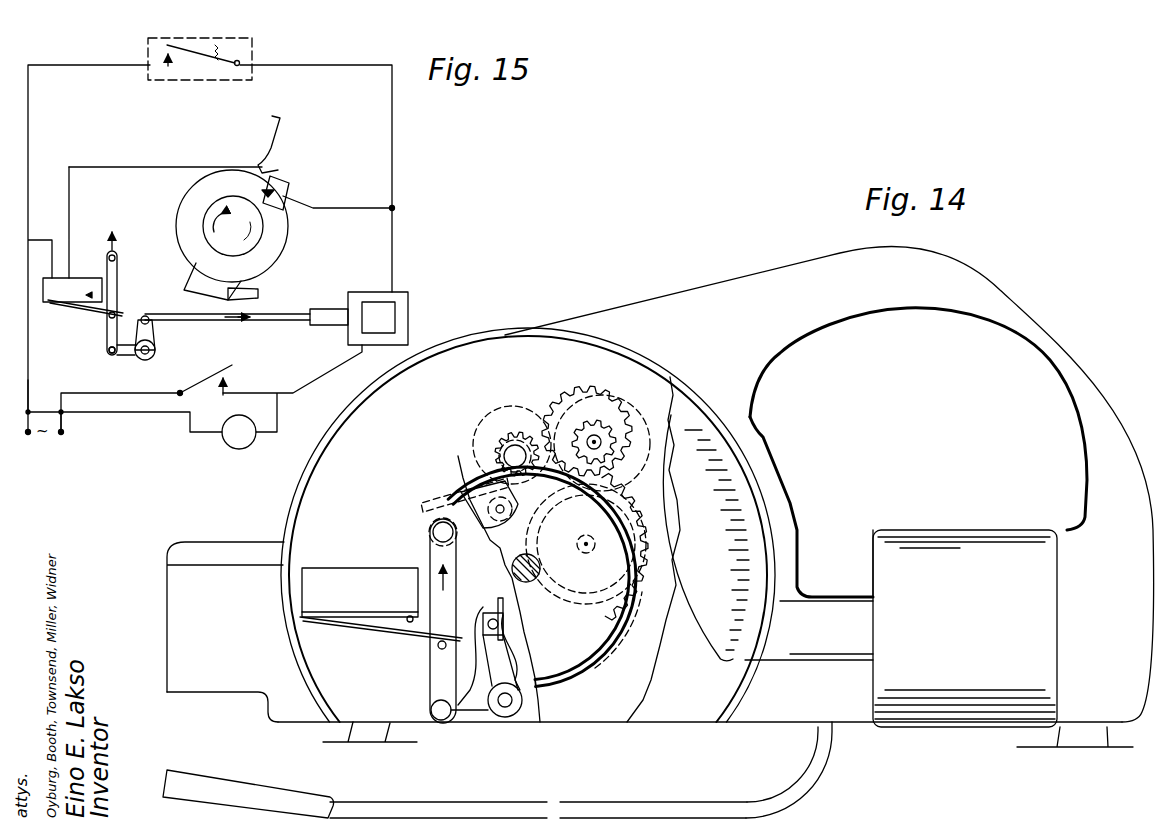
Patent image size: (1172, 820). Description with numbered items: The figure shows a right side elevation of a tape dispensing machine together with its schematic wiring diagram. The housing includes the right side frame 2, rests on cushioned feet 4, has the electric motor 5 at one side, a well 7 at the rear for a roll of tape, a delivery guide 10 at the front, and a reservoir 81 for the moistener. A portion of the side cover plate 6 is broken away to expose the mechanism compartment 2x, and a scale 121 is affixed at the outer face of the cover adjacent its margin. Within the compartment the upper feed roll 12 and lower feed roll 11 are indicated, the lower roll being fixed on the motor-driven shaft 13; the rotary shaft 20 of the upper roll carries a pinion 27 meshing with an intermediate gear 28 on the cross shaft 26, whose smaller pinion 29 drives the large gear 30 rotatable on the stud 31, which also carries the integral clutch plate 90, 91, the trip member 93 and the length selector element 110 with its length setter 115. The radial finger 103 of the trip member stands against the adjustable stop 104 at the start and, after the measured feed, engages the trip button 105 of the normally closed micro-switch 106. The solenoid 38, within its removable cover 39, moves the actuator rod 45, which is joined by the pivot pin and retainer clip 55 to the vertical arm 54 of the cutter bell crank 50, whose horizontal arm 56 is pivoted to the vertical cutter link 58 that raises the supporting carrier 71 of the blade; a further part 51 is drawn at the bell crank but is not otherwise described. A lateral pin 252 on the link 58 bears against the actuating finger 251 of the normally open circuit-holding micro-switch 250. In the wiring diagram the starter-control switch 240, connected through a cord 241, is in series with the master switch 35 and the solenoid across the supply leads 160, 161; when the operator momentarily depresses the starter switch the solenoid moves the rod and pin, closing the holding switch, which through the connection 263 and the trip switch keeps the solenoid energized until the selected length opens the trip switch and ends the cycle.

In FIG. 14, the right side frame 2 is at (1024, 273).
In FIG. 14, the mechanism compartment 2x is at (603, 350).
In FIG. 14, the cushioned feet 4 is at (358, 732).
In FIG. 15, the electric motor 5 is at (253, 423).
In FIG. 14, the side cover plate 6 is at (668, 724).
In FIG. 14, the well 7 is at (1020, 383).
In FIG. 14, the delivery guide 10 is at (236, 548).
In FIG. 14, the lower feed roll 11 is at (598, 603).
In FIG. 14, the upper feed roll 12 is at (474, 440).
In FIG. 14, the motor-driven shaft 13 is at (583, 544).
In FIG. 14, the rotary shaft 20 is at (519, 512).
In FIG. 14, the cross shaft 26 is at (600, 442).
In FIG. 14, the pinion 27 is at (517, 440).
In FIG. 14, the intermediate gear 28 is at (583, 394).
In FIG. 14, the smaller pinion 29 is at (598, 434).
In FIG. 14, the large gear 30 is at (632, 547).
In FIG. 14, the stud 31 is at (527, 583).
In FIG. 15, the master switch 35 is at (212, 378).
In FIG. 14, the solenoid 38 is at (962, 526).
In FIG. 15, the removable cover 39 is at (408, 300).
In FIG. 14, the removable cover 39 is at (1035, 607).
In FIG. 15, the actuator rod 45 is at (291, 321).
In FIG. 14, the actuator rod 45 is at (594, 592).
In FIG. 14, the cutter bell crank 50 is at (466, 672).
In FIG. 14, the roller pin 51 is at (510, 700).
In FIG. 15, the vertical arm 54 is at (156, 335).
In FIG. 14, the vertical arm 54 is at (494, 658).
In FIG. 14, the pivot pin and retainer clip 55 is at (500, 610).
In FIG. 15, the horizontal arm 56 is at (133, 357).
In FIG. 14, the horizontal arm 56 is at (476, 717).
In FIG. 15, the vertical cutter link 58 is at (119, 263).
In FIG. 14, the vertical cutter link 58 is at (448, 600).
In FIG. 14, the supporting carrier 71 is at (438, 499).
In FIG. 14, the reservoir 81 is at (250, 690).
In FIG. 14, the clutch plate 90 is at (588, 673).
In FIG. 14, the clutch plate 91 is at (622, 632).
In FIG. 15, the trip member 93 is at (233, 226).
In FIG. 15, the radial finger 103 is at (198, 271).
In FIG. 15, the adjustable stop 104 is at (259, 290).
In FIG. 15, the trip button 105 is at (262, 194).
In FIG. 15, the micro-switch 106 is at (292, 180).
In FIG. 15, the length selector element 110 is at (286, 243).
In FIG. 15, the length setter 115 is at (282, 126).
In FIG. 14, the scale 121 is at (736, 586).
In FIG. 15, the main supply lead 160 is at (29, 397).
In FIG. 15, the main supply lead 161 is at (66, 421).
In FIG. 15, the starter-control switch 240 is at (160, 78).
In FIG. 14, the starter-control switch 240 is at (226, 781).
In FIG. 14, the cord 241 is at (822, 766).
In FIG. 15, the circuit-holding micro-switch 250 is at (48, 305).
In FIG. 14, the circuit-holding micro-switch 250 is at (350, 578).
In FIG. 15, the actuating finger 251 is at (90, 330).
In FIG. 14, the actuating finger 251 is at (378, 628).
In FIG. 15, the lateral pin 252 is at (108, 346).
In FIG. 14, the lateral pin 252 is at (436, 646).
In FIG. 15, the connection 263 is at (130, 167).